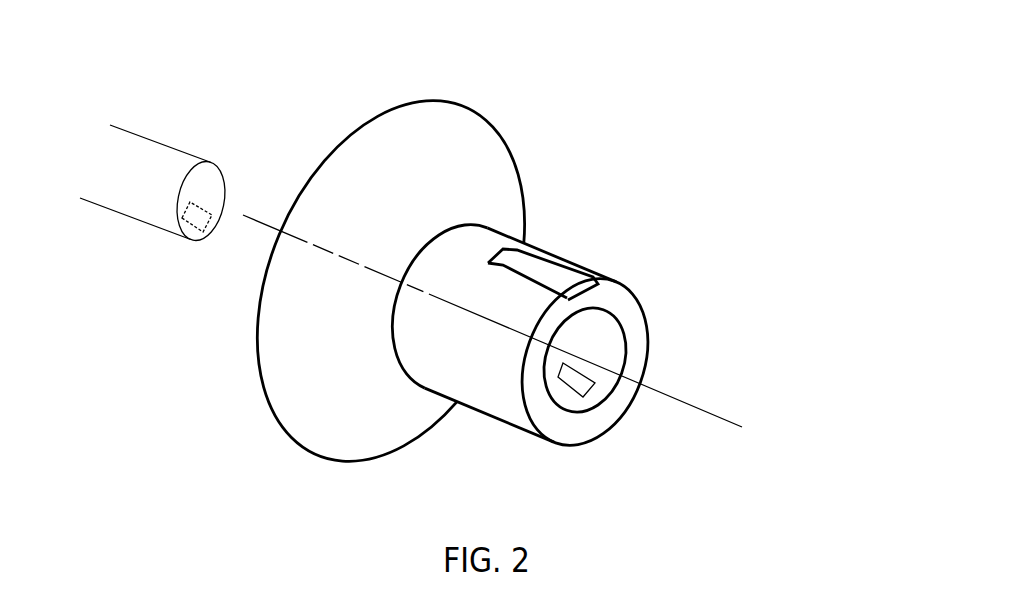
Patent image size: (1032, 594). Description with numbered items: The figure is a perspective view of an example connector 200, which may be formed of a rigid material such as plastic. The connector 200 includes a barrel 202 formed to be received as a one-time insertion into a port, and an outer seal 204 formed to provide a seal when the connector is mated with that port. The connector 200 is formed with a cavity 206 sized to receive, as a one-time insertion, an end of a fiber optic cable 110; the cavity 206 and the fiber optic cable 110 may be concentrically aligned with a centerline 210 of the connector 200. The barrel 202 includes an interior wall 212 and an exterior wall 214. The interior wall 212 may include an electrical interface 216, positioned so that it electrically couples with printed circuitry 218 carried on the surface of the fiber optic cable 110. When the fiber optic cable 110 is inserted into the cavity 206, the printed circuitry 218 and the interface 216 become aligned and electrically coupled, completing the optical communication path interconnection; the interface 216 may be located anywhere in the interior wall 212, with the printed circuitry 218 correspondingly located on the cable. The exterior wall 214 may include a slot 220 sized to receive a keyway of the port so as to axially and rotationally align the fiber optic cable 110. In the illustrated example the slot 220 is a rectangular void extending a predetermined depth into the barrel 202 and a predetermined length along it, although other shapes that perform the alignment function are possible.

The fiber optic cable 110 is at (180, 151).
The connector 200 is at (735, 50).
The barrel 202 is at (476, 386).
The outer seal 204 is at (455, 160).
The cavity 206 is at (605, 362).
The centerline 210 is at (680, 398).
The interior wall 212 is at (600, 347).
The exterior wall 214 is at (500, 400).
The electrical interface 216 is at (583, 395).
The printed circuitry 218 is at (195, 217).
The slot 220 is at (552, 282).